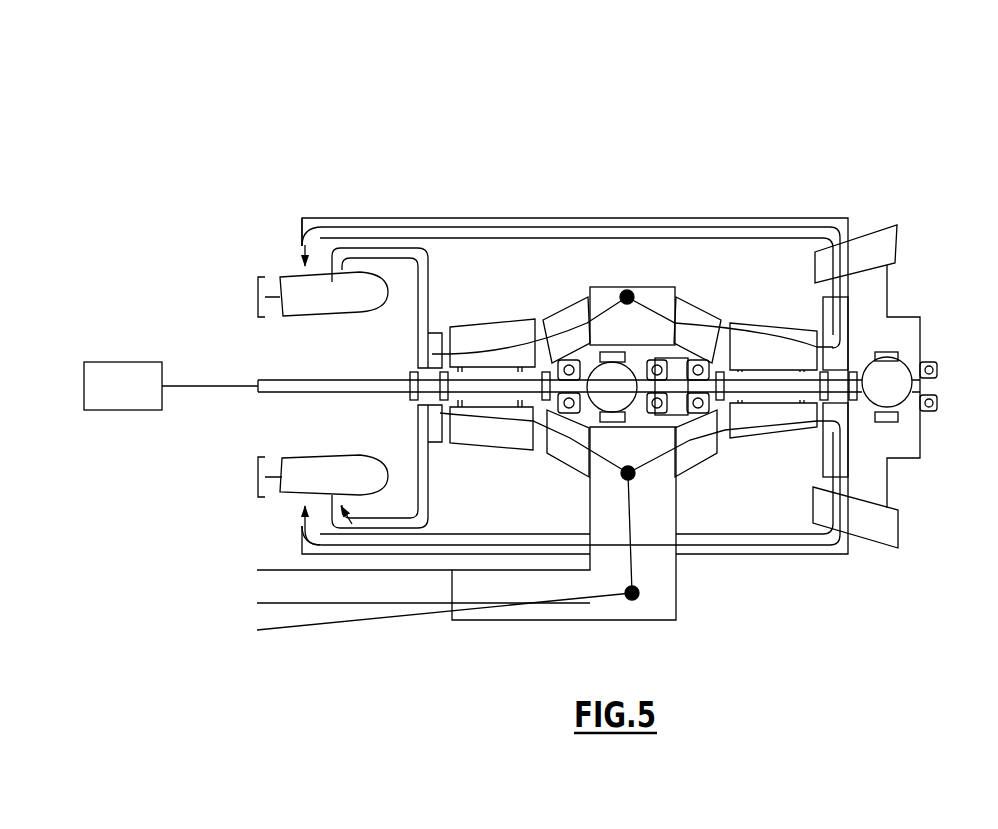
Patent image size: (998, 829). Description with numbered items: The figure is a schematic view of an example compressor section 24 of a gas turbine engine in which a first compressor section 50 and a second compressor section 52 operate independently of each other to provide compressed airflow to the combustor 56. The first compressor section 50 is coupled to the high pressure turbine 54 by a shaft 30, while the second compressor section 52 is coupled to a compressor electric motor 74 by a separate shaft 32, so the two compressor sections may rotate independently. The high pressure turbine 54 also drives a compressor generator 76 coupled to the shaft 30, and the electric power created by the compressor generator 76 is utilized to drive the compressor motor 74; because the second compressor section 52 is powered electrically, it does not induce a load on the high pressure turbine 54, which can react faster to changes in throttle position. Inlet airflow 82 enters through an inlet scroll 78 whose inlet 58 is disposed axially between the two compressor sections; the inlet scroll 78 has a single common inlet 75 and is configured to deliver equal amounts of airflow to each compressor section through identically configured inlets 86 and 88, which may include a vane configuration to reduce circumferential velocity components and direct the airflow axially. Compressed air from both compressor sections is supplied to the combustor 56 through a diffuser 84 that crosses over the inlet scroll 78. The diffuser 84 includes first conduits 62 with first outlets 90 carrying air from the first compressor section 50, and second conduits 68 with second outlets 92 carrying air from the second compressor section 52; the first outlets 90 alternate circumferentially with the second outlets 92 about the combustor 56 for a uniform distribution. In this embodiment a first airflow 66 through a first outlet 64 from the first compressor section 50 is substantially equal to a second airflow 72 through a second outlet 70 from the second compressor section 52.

The compressor section 24 is at (884, 160).
The shaft 30 is at (337, 393).
The shaft 32 is at (775, 393).
The first compressor section 50 is at (490, 455).
The second compressor section 52 is at (769, 453).
The high pressure turbine 54 is at (126, 398).
The combustor 56 is at (345, 298).
The inlet 58 is at (655, 467).
The first conduits 62 is at (432, 275).
The first outlet 64 is at (430, 354).
The first airflow 66 is at (374, 245).
The second conduits 68 is at (586, 218).
The second outlet 70 is at (856, 328).
The second airflow 72 is at (430, 225).
The compressor electric motor 74 is at (905, 372).
The single common inlet 75 is at (478, 616).
The compressor generator 76 is at (628, 378).
The inlet scroll 78 is at (679, 590).
The inlet airflow 82 is at (402, 610).
The diffuser 84 is at (345, 198).
The inlet 86 is at (538, 445).
The inlet 88 is at (723, 437).
The first outlets 90 is at (338, 262).
The second outlets 92 is at (300, 242).